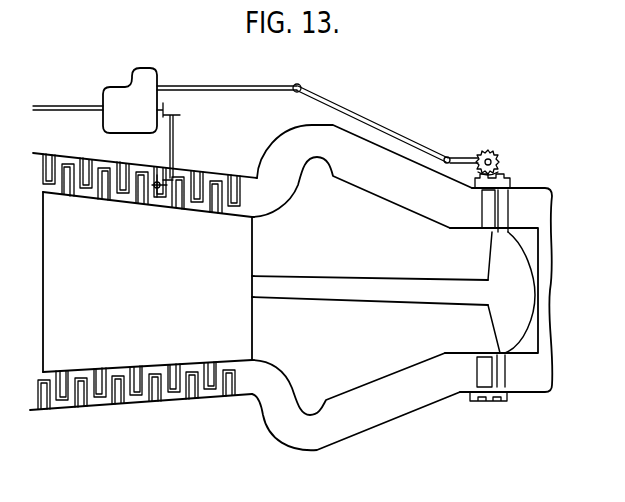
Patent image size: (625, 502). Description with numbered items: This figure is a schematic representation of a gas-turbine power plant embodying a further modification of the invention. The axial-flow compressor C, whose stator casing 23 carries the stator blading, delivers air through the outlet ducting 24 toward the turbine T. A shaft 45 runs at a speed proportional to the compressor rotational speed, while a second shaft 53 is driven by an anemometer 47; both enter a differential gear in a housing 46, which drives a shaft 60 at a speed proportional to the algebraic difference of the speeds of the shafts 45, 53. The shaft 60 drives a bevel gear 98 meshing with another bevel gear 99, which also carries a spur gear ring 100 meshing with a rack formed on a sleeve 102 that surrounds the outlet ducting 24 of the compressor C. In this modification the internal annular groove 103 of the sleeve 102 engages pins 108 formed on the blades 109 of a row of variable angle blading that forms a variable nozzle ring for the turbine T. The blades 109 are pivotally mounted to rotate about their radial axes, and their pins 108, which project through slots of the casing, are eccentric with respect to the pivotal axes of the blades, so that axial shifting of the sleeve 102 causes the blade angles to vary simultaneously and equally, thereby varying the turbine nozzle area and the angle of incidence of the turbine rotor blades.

The stator casing 23 is at (223, 176).
The ducting 24 is at (291, 211).
The shaft 45 is at (53, 107).
The housing 46 is at (139, 70).
The anemometer 47 is at (157, 197).
The shaft 53 is at (159, 141).
The shaft 60 is at (243, 86).
The bevel gear 98 is at (477, 153).
The bevel gear 99 is at (499, 156).
The spur gear ring 100 is at (500, 143).
The sleeve 102 is at (510, 180).
The internal annular groove 103 is at (528, 288).
The pins 108 is at (464, 290).
The blades 109 is at (485, 222).
The compressor C is at (159, 394).
The turbine T is at (496, 403).